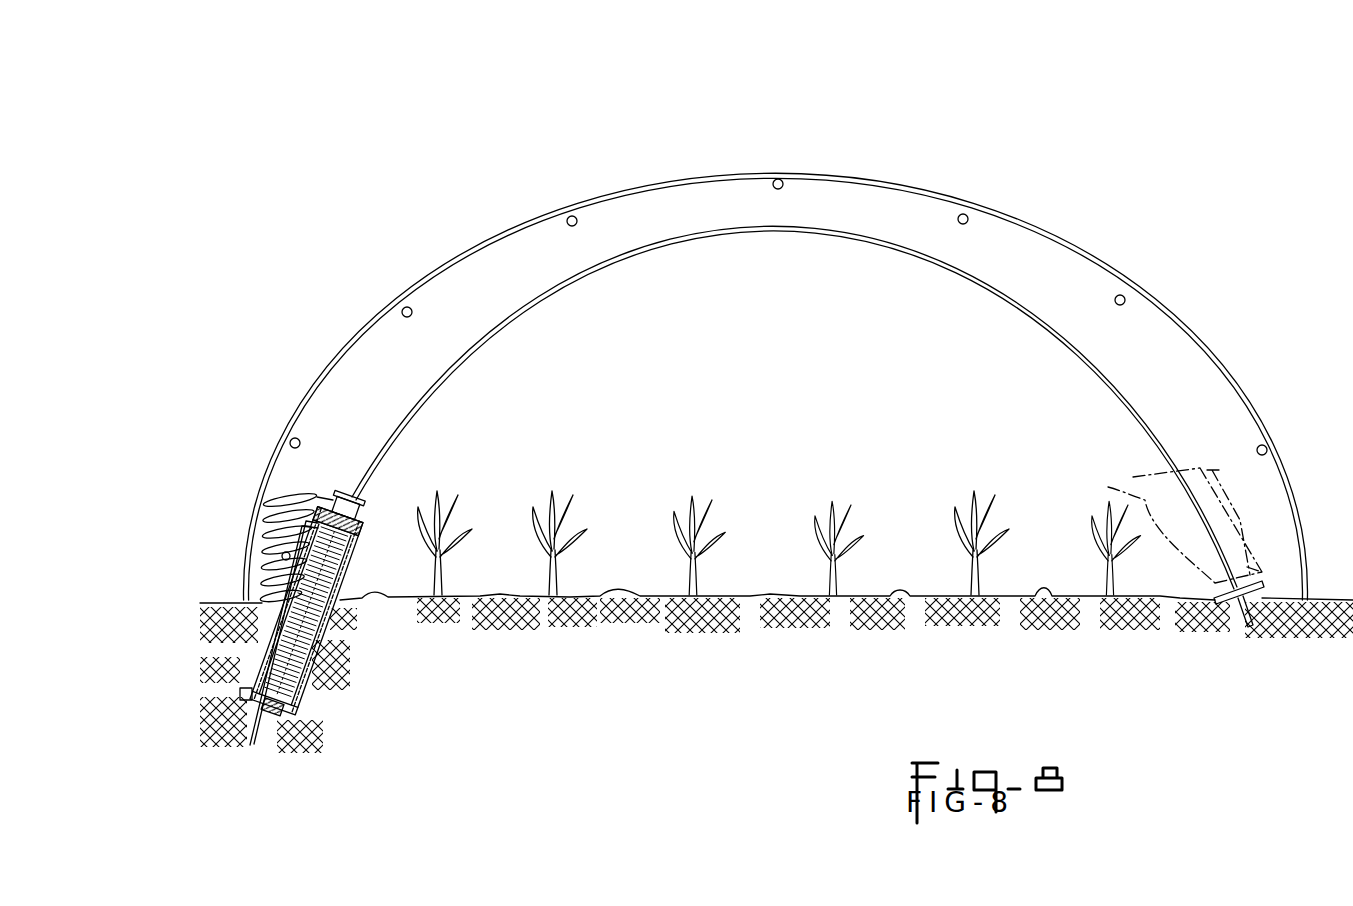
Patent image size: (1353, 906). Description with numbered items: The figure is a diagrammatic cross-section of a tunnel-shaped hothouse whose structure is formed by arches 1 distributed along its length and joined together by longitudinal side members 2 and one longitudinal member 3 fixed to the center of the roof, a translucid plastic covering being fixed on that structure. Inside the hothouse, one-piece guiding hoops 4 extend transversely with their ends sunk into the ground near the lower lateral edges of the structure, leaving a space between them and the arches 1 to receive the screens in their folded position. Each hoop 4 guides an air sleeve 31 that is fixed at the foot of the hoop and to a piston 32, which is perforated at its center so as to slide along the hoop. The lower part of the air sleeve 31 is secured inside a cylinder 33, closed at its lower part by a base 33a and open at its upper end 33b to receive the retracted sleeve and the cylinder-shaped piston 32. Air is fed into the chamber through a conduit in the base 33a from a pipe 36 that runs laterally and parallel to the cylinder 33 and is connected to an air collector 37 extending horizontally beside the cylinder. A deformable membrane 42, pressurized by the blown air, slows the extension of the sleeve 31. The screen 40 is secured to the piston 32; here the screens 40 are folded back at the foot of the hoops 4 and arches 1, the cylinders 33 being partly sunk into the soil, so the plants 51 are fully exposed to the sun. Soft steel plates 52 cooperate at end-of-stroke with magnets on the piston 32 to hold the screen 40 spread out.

The arch 1 is at (398, 312).
The longitudinal side member 2 is at (572, 216).
The longitudinal member 3 is at (779, 179).
The guiding hoop 4 is at (557, 290).
The air sleeve 31 is at (332, 567).
The piston 32 is at (352, 500).
The cylinder 33 is at (327, 650).
The base 33a is at (293, 710).
The upper end of the cylinder 33b is at (358, 520).
The pipe 36 is at (252, 603).
The air collector 37 is at (282, 556).
The screen 40 is at (295, 490).
The deformable membrane 42 is at (357, 537).
The plants 51 is at (550, 555).
The soft steel plate 52 is at (1262, 590).